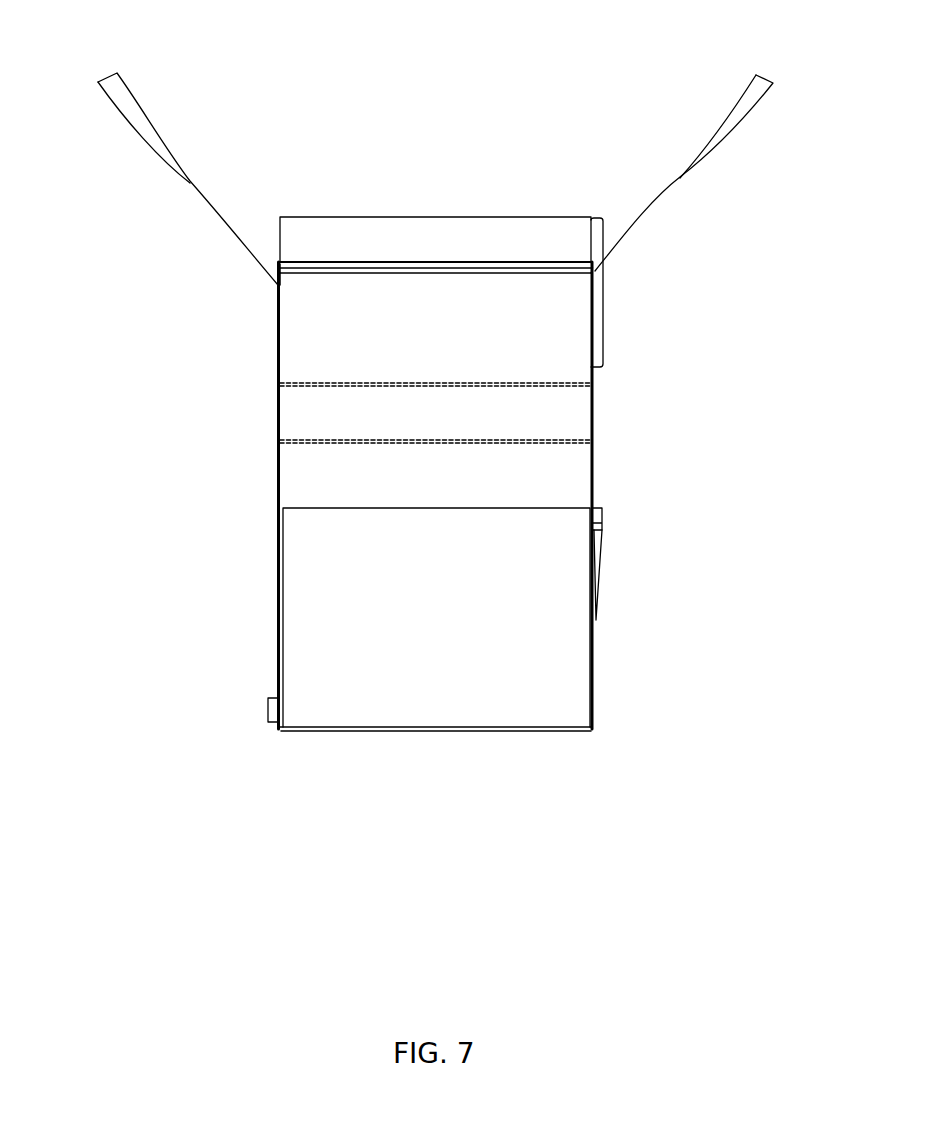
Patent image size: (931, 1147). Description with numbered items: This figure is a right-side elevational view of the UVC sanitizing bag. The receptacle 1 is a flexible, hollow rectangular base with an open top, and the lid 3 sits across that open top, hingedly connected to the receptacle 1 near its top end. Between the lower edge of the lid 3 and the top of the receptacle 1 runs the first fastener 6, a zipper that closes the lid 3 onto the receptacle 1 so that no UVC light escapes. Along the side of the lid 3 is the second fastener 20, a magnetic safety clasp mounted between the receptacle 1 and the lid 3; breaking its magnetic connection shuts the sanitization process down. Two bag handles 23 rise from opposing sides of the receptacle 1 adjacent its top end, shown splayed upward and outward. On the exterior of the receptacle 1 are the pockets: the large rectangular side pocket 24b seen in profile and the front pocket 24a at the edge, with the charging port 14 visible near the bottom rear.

The receptacle 1 is at (583, 432).
The lid 3 is at (391, 222).
The first fastener 6 is at (277, 284).
The charging port 14 is at (272, 710).
The second fastener 20 is at (597, 355).
The bag handles 23 is at (115, 90).
The front pocket 24a is at (596, 505).
The side pockets 24b is at (318, 502).